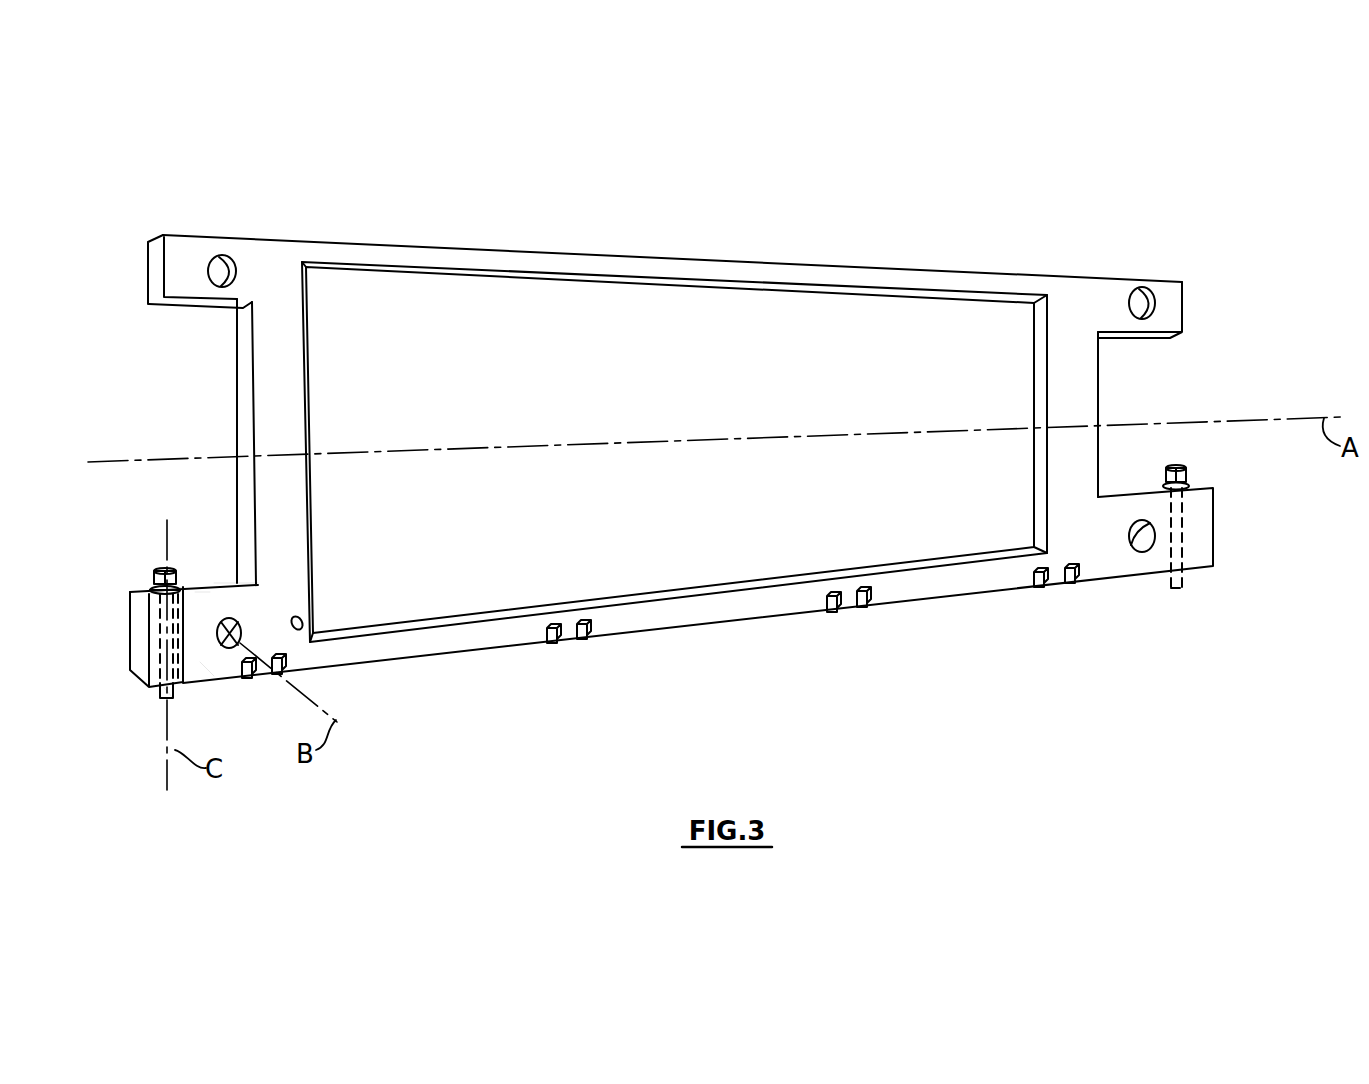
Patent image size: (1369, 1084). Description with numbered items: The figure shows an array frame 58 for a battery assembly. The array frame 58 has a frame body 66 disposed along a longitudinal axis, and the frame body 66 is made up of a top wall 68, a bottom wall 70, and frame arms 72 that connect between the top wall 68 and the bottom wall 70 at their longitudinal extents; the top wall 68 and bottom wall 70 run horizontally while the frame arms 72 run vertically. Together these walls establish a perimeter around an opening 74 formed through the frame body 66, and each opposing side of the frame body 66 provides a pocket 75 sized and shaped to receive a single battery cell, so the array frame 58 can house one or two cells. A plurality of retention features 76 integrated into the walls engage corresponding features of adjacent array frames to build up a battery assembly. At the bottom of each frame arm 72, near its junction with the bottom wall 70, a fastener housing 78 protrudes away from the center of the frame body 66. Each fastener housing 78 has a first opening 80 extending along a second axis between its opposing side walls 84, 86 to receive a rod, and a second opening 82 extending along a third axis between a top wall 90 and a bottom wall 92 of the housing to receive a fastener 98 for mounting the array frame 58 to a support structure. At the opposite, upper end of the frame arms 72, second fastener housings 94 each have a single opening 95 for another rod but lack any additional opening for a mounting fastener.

The array frame 58 is at (728, 222).
The frame body 66 is at (1083, 265).
The top wall 68 is at (812, 278).
The bottom wall 70 is at (703, 603).
The frame arms 72 is at (295, 383).
The opening 74 is at (711, 477).
The pocket 75 is at (332, 610).
The retention features 76 is at (285, 675).
The fastener housing 78 is at (203, 586).
The first opening 80 is at (243, 626).
The second opening 82 is at (158, 640).
The side wall 84 is at (207, 667).
The side wall 86 is at (132, 627).
The top wall 90 is at (221, 587).
The bottom wall 92 is at (190, 685).
The second fastener housing 94 is at (188, 232).
The opening 95 is at (231, 258).
The fastener 98 is at (150, 583).